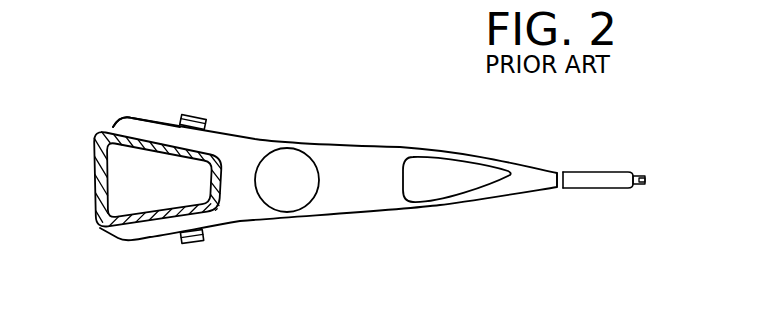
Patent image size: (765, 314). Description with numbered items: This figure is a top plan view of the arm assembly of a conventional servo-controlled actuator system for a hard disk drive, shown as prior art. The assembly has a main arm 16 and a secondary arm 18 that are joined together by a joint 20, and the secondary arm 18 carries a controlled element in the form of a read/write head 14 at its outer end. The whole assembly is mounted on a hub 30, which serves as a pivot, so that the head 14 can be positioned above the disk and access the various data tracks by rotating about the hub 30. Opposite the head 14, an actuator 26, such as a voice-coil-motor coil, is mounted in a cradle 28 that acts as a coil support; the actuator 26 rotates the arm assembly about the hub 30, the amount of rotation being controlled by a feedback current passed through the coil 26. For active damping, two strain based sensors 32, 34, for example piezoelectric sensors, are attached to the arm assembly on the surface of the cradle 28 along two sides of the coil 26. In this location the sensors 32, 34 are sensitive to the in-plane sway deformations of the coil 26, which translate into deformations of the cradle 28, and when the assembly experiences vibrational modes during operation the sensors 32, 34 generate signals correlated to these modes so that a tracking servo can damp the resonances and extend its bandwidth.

The read/write head 14 is at (643, 173).
The main arm 16 is at (358, 158).
The secondary arm 18 is at (600, 178).
The joint 20 is at (563, 187).
The actuator 26 is at (97, 130).
The cradle 28 is at (148, 123).
The hub 30 is at (290, 198).
The sensor 32 is at (197, 240).
The sensor 34 is at (193, 117).